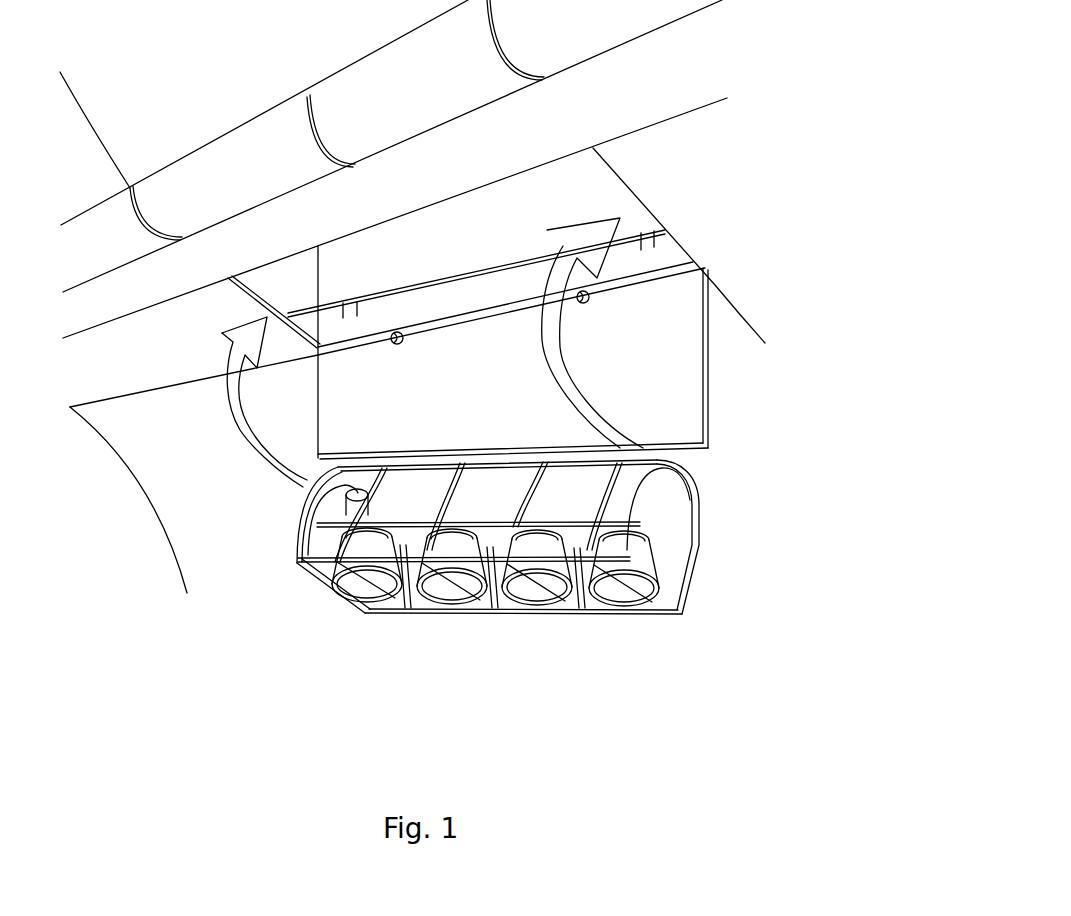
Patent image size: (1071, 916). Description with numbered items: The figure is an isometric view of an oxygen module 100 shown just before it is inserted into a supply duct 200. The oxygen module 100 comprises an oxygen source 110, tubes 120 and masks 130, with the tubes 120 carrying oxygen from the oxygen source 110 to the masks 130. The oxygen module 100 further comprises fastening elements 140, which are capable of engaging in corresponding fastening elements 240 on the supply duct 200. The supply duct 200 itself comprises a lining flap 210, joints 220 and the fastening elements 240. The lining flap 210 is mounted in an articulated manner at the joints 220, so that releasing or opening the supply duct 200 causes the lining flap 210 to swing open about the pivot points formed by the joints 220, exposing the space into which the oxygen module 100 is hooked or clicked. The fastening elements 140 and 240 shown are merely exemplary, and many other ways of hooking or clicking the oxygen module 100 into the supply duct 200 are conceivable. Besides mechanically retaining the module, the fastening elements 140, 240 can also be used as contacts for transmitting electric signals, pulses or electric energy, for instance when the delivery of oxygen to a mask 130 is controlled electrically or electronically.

The oxygen module 100 is at (690, 653).
The oxygen source 110 is at (652, 510).
The tubes 120 is at (583, 552).
The masks 130 is at (460, 580).
The fastening elements 140 is at (663, 583).
The supply duct 200 is at (545, 186).
The lining flap 210 is at (657, 323).
The joints 220 is at (596, 278).
The fastening elements 240 is at (623, 245).